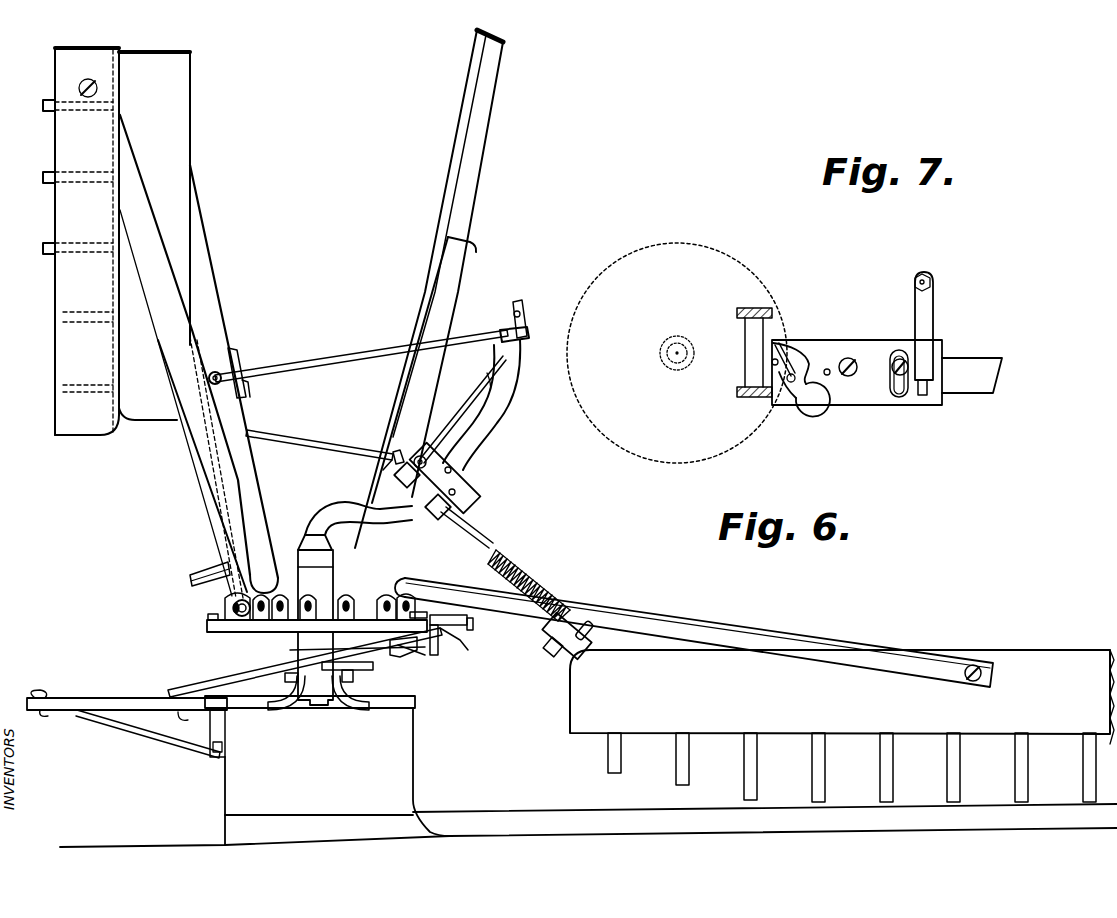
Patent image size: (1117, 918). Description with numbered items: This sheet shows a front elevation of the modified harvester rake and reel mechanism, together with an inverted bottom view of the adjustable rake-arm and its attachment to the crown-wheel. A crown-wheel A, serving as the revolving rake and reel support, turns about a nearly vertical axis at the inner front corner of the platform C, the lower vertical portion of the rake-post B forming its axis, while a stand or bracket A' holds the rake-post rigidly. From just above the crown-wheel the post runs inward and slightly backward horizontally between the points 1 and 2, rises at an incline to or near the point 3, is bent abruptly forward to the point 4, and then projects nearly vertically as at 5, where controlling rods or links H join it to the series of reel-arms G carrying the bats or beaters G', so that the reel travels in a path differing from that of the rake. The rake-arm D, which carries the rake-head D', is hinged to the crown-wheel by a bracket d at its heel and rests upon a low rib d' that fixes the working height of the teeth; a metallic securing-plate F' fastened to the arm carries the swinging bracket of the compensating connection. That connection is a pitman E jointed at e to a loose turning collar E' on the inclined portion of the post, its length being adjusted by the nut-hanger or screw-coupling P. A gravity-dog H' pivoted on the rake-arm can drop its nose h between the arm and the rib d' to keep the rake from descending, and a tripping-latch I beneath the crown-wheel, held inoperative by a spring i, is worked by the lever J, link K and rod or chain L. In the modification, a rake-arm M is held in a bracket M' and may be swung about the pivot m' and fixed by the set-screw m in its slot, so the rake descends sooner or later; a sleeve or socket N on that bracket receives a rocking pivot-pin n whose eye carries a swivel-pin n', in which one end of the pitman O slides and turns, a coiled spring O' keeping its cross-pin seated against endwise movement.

In FIG. 6, the bats or beaters G' is at (273, 289).
In FIG. 6, the rake-head D' is at (154, 234).
In FIG. 6, the reel-arms G is at (298, 413).
In FIG. 6, the rake-arm D is at (199, 354).
In FIG. 6, the metallic securing-plate F' is at (242, 365).
In FIG. 6, the controlling rods or links H is at (361, 394).
In FIG. 6, the vertical upper part of rake-post 5 is at (526, 319).
In FIG. 6, the point of rake-post 4 is at (512, 346).
In FIG. 6, the point of rake-post 3 is at (481, 405).
In FIG. 6, the rod or pitman E is at (325, 443).
In FIG. 6, the joint of pitman e is at (426, 460).
In FIG. 6, the loose collar or turning hanger-bracket E' is at (454, 478).
In FIG. 6, the nut-hanger or screw-coupling P is at (480, 512).
In FIG. 6, the pitman O is at (476, 528).
In FIG. 6, the coiled spring O' is at (529, 585).
In FIG. 6, the point of rake-post 1 is at (346, 518).
In FIG. 6, the point of rake-post 2 is at (396, 512).
In FIG. 6, the rake-post B is at (309, 530).
In FIG. 6, the crown-wheel A is at (317, 623).
In FIG. 7, the crown-wheel A is at (677, 353).
In FIG. 6, the ledge or low rib d' is at (306, 611).
In FIG. 6, the nose or point of gravity-dog h is at (228, 603).
In FIG. 7, the nose or point of gravity-dog h is at (778, 345).
In FIG. 6, the bracket d is at (253, 588).
In FIG. 6, the gravity-dog H' is at (330, 496).
In FIG. 7, the gravity-dog H' is at (801, 380).
In FIG. 6, the link K is at (240, 680).
In FIG. 6, the spring i is at (355, 655).
In FIG. 6, the tripping-latch I is at (420, 652).
In FIG. 6, the stand or bracket A' is at (310, 693).
In FIG. 6, the lever J is at (127, 697).
In FIG. 6, the rod or chain L is at (155, 738).
In FIG. 6, the bracket M' is at (459, 598).
In FIG. 7, the bracket M' is at (857, 372).
In FIG. 6, the rake-arm M is at (699, 632).
In FIG. 7, the rake-arm M is at (980, 363).
In FIG. 6, the sleeve bearing or socket N is at (550, 635).
In FIG. 7, the sleeve bearing or socket N is at (936, 330).
In FIG. 6, the turning eye-rod or rocking pivot-pin n is at (555, 644).
In FIG. 7, the turning eye-rod or rocking pivot-pin n is at (937, 349).
In FIG. 6, the eye-coupling or swivel-pin n' is at (596, 627).
In FIG. 6, the platform C is at (588, 748).
In FIG. 7, the pivot m' is at (848, 367).
In FIG. 7, the set-screw m is at (885, 373).